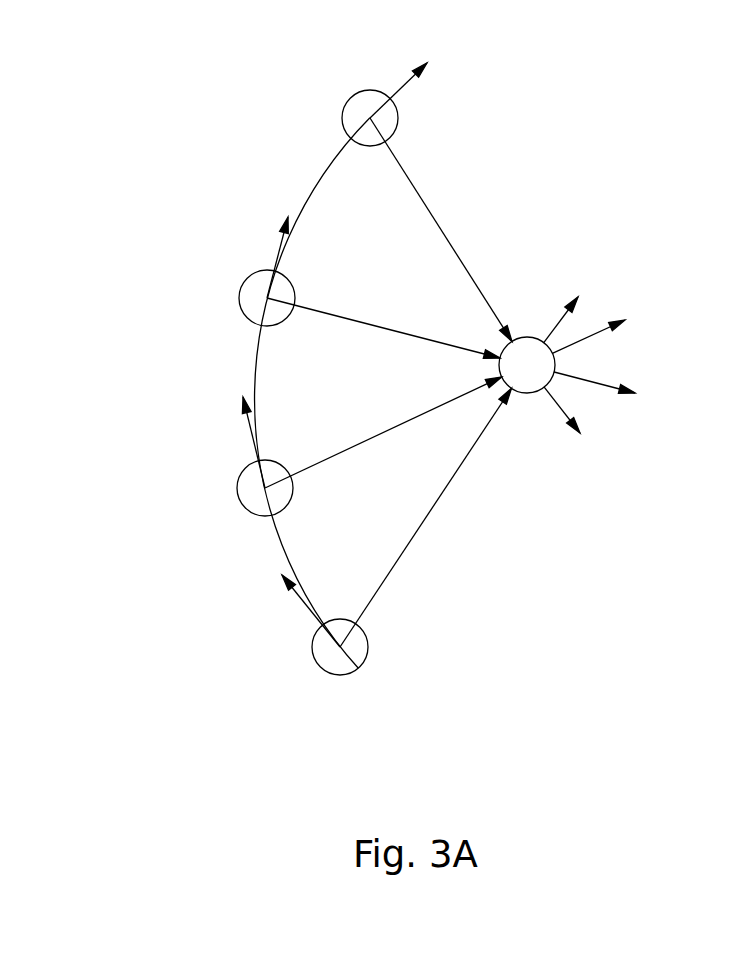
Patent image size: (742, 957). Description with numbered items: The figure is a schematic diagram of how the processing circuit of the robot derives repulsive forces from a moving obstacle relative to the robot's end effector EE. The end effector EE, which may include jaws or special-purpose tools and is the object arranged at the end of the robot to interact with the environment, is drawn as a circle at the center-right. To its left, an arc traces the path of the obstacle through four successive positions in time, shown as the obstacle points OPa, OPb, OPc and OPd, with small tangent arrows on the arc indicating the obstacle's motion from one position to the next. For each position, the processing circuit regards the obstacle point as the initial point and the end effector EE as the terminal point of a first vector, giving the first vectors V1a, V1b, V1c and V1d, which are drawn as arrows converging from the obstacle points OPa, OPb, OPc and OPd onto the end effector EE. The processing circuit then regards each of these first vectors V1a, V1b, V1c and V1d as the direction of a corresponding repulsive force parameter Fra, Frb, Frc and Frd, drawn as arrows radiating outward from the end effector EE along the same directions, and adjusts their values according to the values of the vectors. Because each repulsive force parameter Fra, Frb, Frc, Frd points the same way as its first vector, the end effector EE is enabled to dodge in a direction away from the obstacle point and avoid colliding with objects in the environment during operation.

The obstacle point OPa is at (312, 657).
The obstacle point OPb is at (237, 488).
The obstacle point OPc is at (240, 282).
The obstacle point OPd is at (348, 100).
The first vector V1a is at (427, 518).
The first vector V1b is at (353, 450).
The first vector V1c is at (363, 323).
The first vector V1d is at (440, 222).
The end effector EE is at (528, 393).
The repulsive force parameter Fra is at (558, 325).
The repulsive force parameter Frb is at (597, 330).
The repulsive force parameter Frc is at (603, 378).
The repulsive force parameter Frd is at (570, 405).